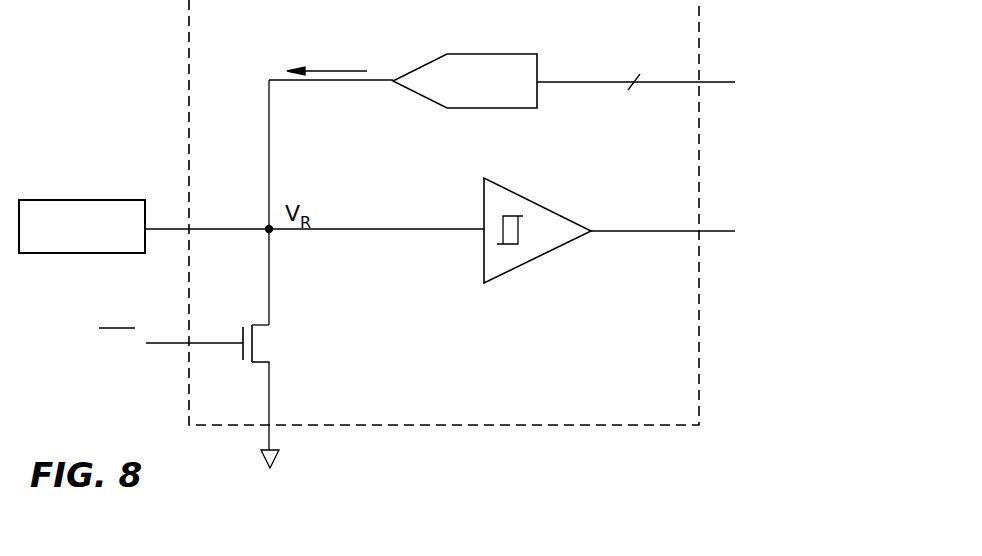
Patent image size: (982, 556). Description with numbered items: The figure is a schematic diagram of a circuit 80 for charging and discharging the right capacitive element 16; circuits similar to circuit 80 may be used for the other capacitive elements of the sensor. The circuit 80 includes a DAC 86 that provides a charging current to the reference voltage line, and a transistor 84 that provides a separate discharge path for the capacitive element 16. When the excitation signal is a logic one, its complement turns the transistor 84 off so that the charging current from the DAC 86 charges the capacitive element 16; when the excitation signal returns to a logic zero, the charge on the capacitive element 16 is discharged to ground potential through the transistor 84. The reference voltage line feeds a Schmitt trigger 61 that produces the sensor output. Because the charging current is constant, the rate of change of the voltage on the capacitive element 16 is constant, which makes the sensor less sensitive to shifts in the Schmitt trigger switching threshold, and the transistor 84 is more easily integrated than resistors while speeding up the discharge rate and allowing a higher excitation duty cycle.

The circuit 80 is at (619, 401).
The capacitive element 16 is at (69, 236).
The DAC 86 is at (510, 53).
The comparator with hysteresis 61 is at (530, 200).
The transistor 84 is at (262, 360).